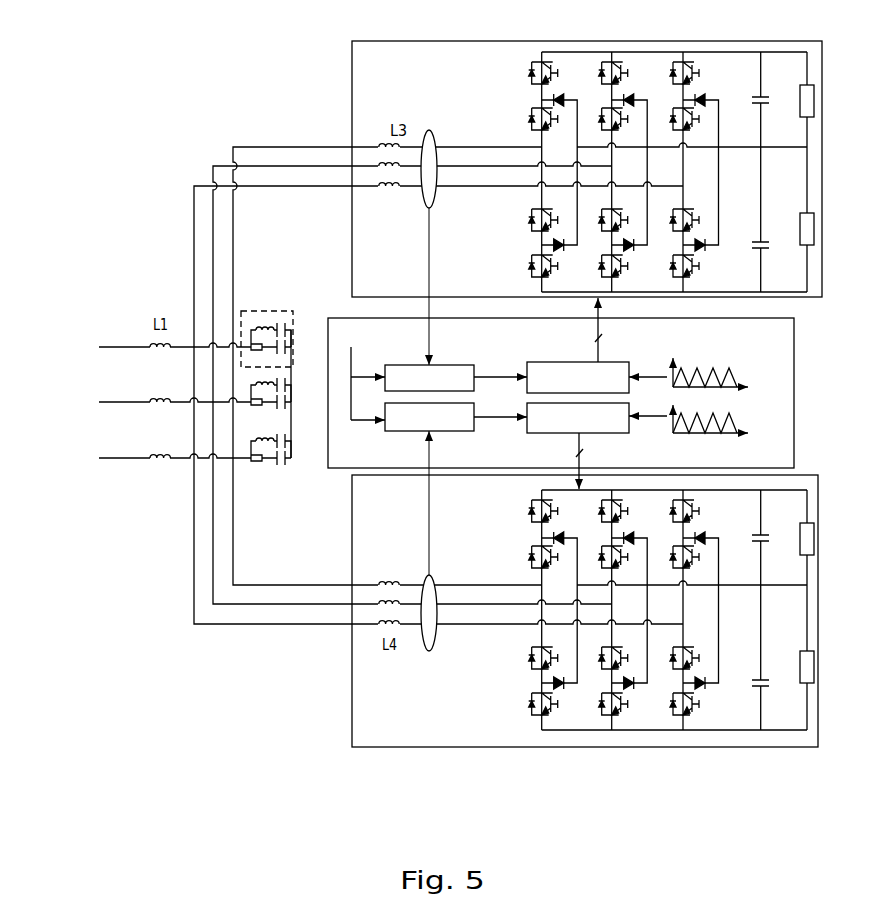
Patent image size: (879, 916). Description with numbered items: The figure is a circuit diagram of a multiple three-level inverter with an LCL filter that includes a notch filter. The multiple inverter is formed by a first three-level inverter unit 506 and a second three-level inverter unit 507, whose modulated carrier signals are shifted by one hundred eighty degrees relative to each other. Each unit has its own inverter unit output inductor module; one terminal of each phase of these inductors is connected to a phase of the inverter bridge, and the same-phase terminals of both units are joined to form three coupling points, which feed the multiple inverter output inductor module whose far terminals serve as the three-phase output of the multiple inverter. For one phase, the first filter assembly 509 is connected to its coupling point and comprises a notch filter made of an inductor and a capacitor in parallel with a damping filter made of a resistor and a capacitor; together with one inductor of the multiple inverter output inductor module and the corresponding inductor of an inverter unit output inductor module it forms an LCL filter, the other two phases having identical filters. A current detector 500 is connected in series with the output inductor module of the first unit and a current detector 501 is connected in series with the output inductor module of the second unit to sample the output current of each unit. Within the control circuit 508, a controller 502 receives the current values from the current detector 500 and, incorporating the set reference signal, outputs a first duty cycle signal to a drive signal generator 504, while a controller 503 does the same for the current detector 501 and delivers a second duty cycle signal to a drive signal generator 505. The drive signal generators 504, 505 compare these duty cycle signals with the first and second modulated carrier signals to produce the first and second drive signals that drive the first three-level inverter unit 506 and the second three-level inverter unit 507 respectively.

The current detector 500 is at (423, 197).
The current detector 501 is at (428, 574).
The controller 502 is at (443, 365).
The controller 503 is at (450, 431).
The drive signal generator 504 is at (607, 362).
The drive signal generator 505 is at (587, 433).
The first three-level inverter unit 506 is at (558, 41).
The second three-level inverter unit 507 is at (603, 747).
The control circuit 508 is at (577, 393).
The first filter assembly 509 is at (257, 311).